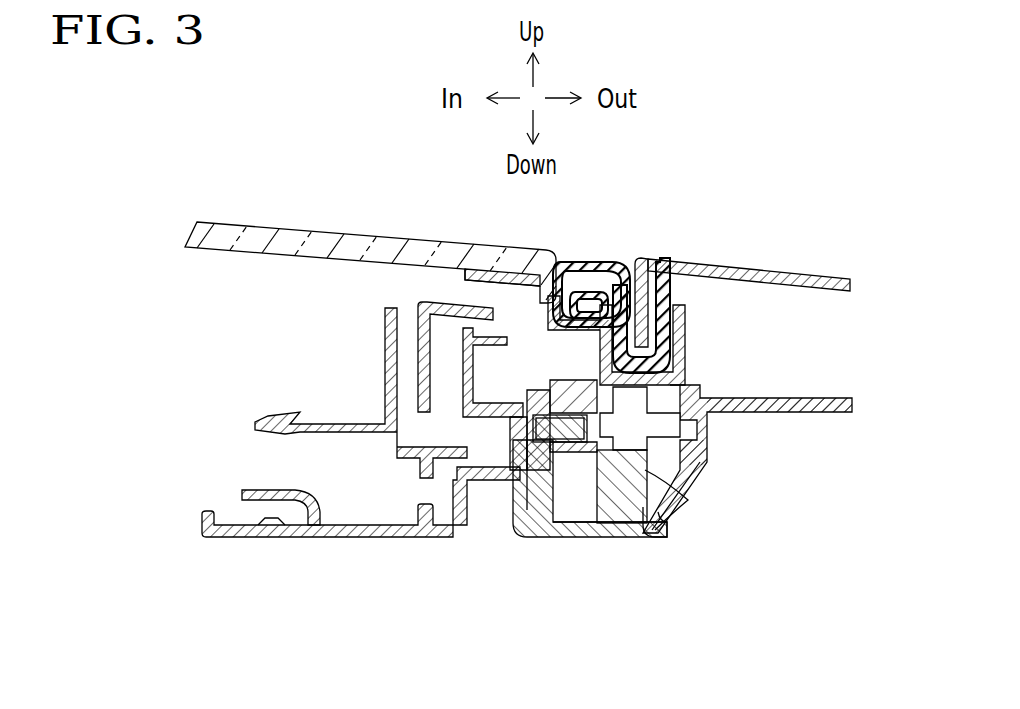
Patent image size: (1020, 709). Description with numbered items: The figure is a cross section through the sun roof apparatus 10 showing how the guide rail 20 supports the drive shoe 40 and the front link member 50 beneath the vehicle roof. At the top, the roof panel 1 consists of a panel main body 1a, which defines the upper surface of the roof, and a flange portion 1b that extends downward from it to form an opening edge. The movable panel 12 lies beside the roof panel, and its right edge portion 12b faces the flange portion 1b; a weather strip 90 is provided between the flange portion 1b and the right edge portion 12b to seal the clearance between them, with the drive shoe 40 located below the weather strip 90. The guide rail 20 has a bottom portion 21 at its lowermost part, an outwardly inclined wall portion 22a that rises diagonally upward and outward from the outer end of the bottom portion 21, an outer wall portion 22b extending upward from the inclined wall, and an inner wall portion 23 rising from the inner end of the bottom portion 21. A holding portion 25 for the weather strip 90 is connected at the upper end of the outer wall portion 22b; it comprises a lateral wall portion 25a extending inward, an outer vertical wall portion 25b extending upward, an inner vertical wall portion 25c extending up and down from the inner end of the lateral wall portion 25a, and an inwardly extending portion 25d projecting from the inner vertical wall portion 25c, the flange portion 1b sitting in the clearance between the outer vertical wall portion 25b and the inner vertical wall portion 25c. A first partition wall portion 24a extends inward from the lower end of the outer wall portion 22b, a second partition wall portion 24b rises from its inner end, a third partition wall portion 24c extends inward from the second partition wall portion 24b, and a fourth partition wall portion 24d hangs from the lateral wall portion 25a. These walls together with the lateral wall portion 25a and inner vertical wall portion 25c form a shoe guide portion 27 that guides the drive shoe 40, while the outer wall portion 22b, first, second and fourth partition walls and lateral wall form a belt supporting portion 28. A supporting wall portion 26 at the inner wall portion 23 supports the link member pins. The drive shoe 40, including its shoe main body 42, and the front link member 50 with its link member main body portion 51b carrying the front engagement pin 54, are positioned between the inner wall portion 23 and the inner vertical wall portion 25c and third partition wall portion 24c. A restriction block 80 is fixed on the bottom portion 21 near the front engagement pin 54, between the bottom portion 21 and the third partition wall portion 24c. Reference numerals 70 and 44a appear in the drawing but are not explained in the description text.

The sun roof apparatus 10 is at (270, 86).
The movable panel 12 is at (298, 230).
The right edge portion 12b is at (528, 250).
The roof panel 1 is at (765, 216).
The panel main body 1a is at (748, 265).
The flange portion 1b is at (672, 262).
The weather strip 90 is at (592, 257).
The retainer 70 is at (453, 302).
The holding portion 25 is at (629, 330).
The lateral wall portion 25a is at (686, 366).
The outer vertical wall portion 25b is at (688, 332).
The inner vertical wall portion 25c is at (600, 352).
The inwardly extending portion 25d is at (558, 326).
The fourth partition wall portion 24d is at (700, 386).
The supporting wall portion 26 is at (456, 400).
The body block 44a is at (548, 384).
The inner wall portion 23 is at (514, 438).
The third partition wall portion 24c is at (633, 455).
The belt supporting portion 28 is at (676, 428).
The outer wall portion 22b is at (712, 438).
The second partition wall portion 24b is at (700, 458).
The outwardly inclined wall portion 22a is at (703, 480).
The first partition wall portion 24a is at (680, 500).
The restriction block 80 is at (660, 520).
The front engagement pin 54 is at (578, 448).
The link member main body portion 51b is at (530, 538).
The front link member 50 is at (530, 600).
The shoe main body 42 is at (592, 537).
The drive shoe 40 is at (590, 604).
The bottom portion 21 is at (622, 538).
The shoe guide portion 27 is at (631, 445).
The guide rail 20 is at (431, 546).